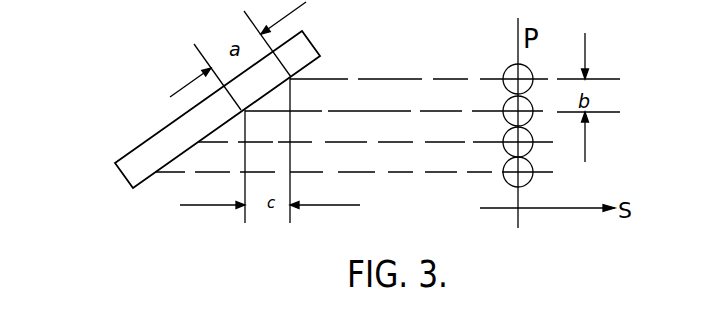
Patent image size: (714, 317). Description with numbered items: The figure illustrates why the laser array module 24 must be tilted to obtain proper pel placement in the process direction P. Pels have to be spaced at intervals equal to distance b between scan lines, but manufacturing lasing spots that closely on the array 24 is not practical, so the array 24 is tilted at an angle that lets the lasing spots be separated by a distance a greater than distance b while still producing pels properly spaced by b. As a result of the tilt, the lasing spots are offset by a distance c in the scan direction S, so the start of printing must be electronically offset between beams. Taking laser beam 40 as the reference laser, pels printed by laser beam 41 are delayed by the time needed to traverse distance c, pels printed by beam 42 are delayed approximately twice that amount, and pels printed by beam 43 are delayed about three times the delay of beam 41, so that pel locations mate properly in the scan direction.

The laser array module 24 is at (157, 139).
The laser beam 40 is at (376, 78).
The laser beam 41 is at (370, 111).
The laser beam 42 is at (355, 143).
The laser beam 43 is at (417, 173).